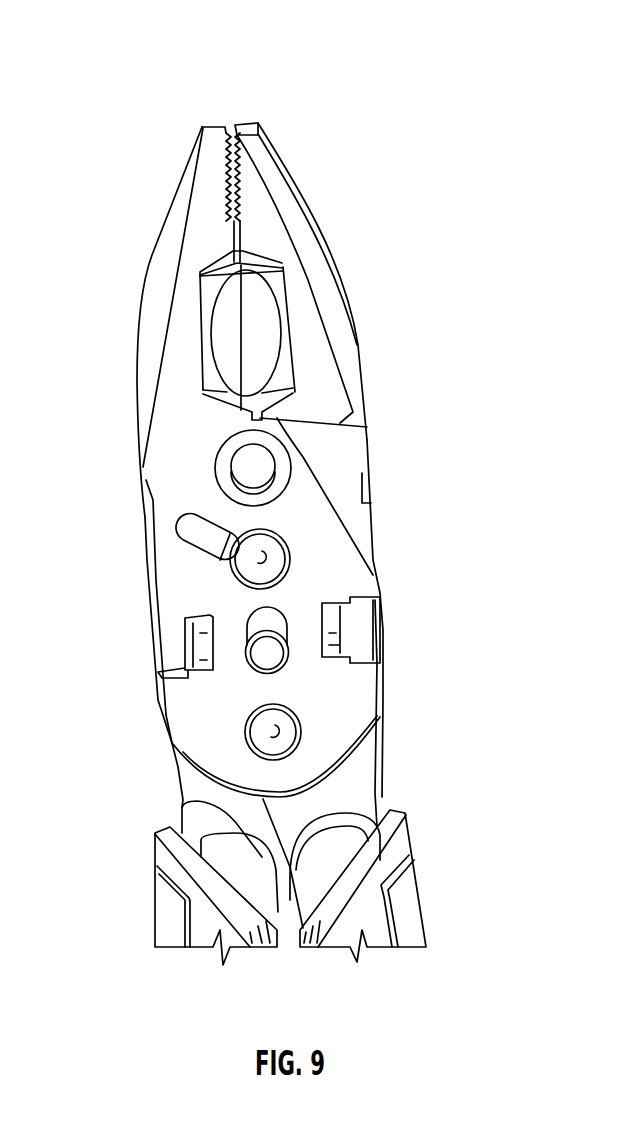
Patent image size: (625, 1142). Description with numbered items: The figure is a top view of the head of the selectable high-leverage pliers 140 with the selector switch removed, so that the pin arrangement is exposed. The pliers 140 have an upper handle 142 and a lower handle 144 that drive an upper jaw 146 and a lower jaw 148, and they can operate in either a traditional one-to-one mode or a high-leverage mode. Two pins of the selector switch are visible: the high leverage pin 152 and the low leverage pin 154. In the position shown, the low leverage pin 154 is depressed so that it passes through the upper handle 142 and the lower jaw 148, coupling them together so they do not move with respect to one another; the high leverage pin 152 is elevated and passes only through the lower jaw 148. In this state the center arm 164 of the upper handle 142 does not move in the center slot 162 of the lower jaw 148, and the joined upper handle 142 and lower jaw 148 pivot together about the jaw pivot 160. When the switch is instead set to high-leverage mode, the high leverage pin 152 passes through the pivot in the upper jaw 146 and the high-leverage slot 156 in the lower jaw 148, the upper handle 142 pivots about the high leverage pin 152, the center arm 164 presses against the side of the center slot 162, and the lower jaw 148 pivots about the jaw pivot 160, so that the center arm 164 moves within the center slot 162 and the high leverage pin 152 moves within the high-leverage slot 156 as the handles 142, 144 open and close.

The selectable high-leverage pliers 140 is at (202, 64).
The upper handle 142 is at (423, 918).
The lower handle 144 is at (156, 927).
The upper jaw 146 is at (298, 190).
The lower jaw 148 is at (158, 240).
The high leverage pin 152 is at (290, 575).
The low leverage pin 154 is at (292, 748).
The high-leverage slot 156 is at (191, 540).
The jaw pivot 160 is at (277, 473).
The center slot 162 is at (257, 625).
The center arm 164 is at (267, 655).